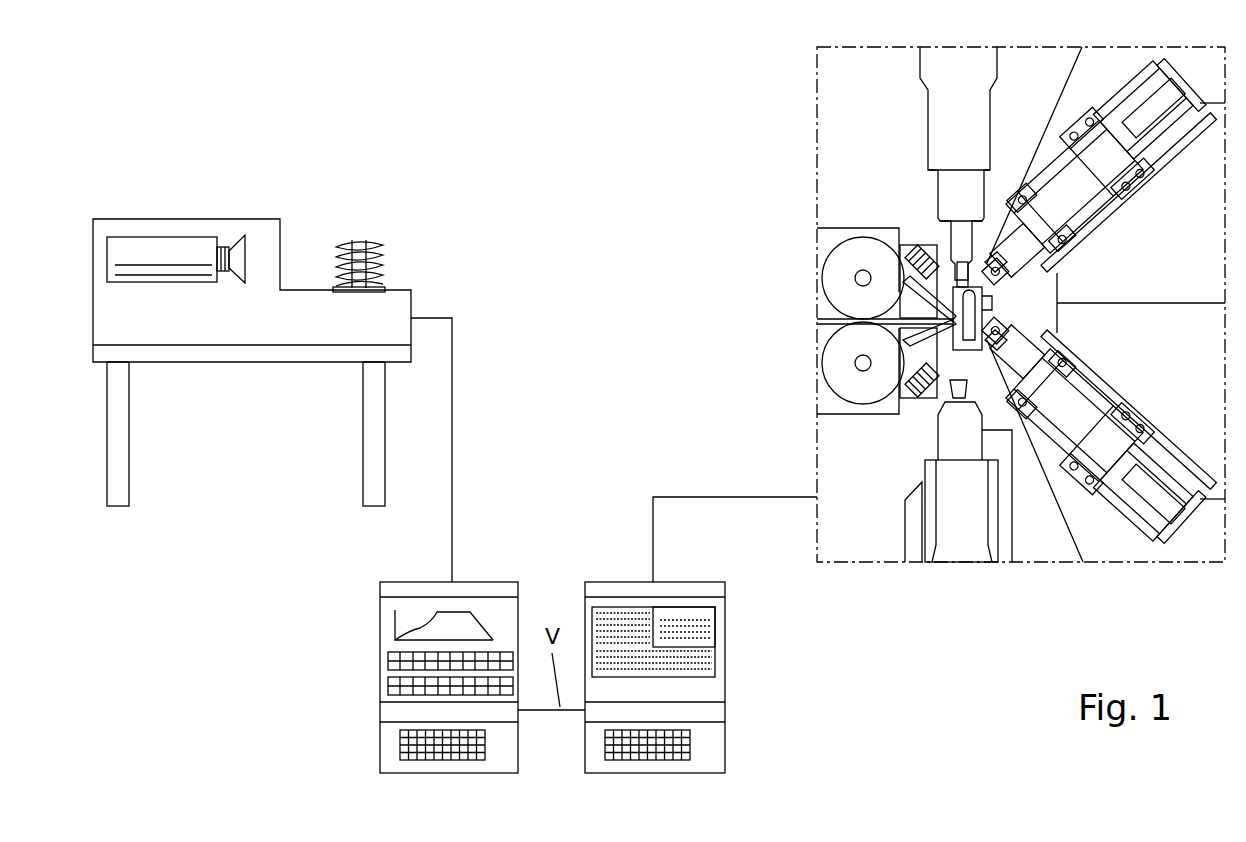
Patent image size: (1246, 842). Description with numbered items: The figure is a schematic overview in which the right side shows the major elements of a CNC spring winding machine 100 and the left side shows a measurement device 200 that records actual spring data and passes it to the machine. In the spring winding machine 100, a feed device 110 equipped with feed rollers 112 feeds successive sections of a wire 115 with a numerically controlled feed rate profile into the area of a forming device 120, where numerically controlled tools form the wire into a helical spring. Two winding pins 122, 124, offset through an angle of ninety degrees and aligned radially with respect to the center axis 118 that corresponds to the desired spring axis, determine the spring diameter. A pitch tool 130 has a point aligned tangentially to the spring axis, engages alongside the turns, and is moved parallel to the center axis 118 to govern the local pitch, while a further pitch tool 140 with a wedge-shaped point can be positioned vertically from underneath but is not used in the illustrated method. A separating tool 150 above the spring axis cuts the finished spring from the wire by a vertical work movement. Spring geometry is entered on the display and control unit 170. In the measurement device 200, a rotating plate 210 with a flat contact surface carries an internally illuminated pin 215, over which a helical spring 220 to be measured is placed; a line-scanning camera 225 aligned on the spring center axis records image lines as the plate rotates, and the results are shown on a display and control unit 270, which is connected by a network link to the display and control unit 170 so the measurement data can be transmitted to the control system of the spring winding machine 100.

The spring winding machine 100 is at (741, 108).
The feed device 110 is at (856, 194).
The feed rollers 112 is at (850, 248).
The wire 115 is at (840, 303).
The center axis 118 is at (1000, 300).
The forming device 120 is at (1120, 254).
The winding pin 122 is at (1005, 327).
The winding pin 124 is at (1003, 267).
The pitch tool 130 is at (955, 278).
The further pitch tool 140 is at (950, 399).
The separating tool 150 is at (985, 250).
The display and control unit 170 is at (757, 721).
The measurement device 200 is at (482, 182).
The rotating plate 210 is at (388, 286).
The pin 215 is at (360, 240).
The helical spring 220 is at (380, 242).
The line-scanning camera 225 is at (223, 247).
The display and control unit 270 is at (359, 725).